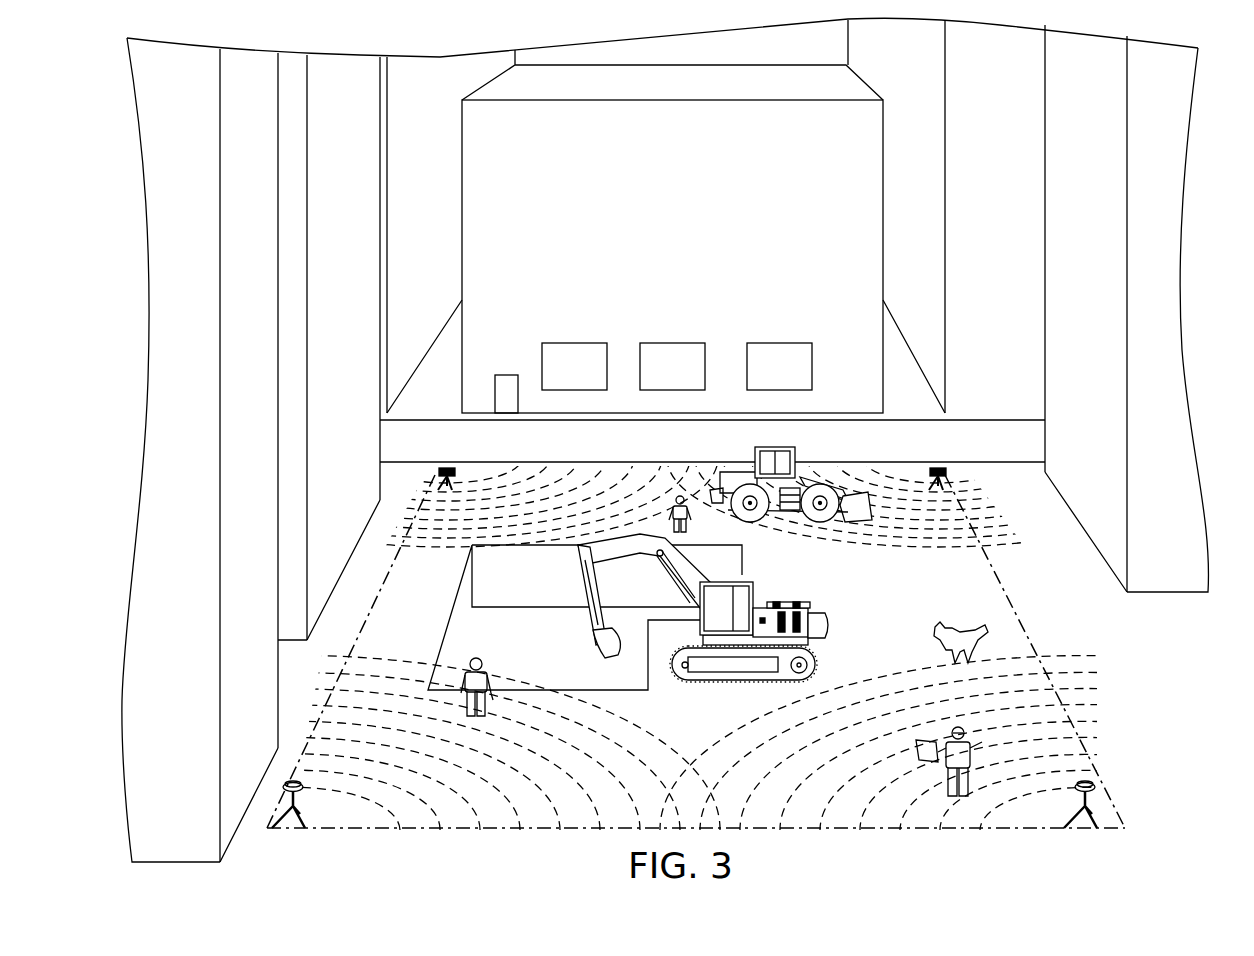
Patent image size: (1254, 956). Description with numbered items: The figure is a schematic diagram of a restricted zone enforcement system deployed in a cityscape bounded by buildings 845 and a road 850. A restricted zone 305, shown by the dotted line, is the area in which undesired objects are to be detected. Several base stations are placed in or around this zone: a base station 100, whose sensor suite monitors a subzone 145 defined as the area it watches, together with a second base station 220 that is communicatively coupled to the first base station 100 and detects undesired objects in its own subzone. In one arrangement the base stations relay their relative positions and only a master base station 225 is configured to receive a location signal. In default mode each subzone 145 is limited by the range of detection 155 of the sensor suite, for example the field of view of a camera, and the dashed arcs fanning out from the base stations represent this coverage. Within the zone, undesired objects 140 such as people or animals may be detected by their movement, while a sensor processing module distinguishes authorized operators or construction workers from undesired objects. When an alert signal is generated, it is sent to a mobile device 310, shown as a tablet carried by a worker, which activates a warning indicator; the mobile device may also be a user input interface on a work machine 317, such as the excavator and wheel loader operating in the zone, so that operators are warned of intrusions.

The base station 100 is at (749, 628).
The second base station 220 is at (455, 472).
The master base station 225 is at (305, 788).
The undesired object 140 is at (668, 512).
The subzone 145 is at (703, 644).
The range of detection 155 is at (571, 798).
The restricted zone 305 is at (710, 780).
The mobile device 310 is at (915, 733).
The work machine 317 is at (775, 518).
The building 845 is at (683, 224).
The road 850 is at (891, 456).